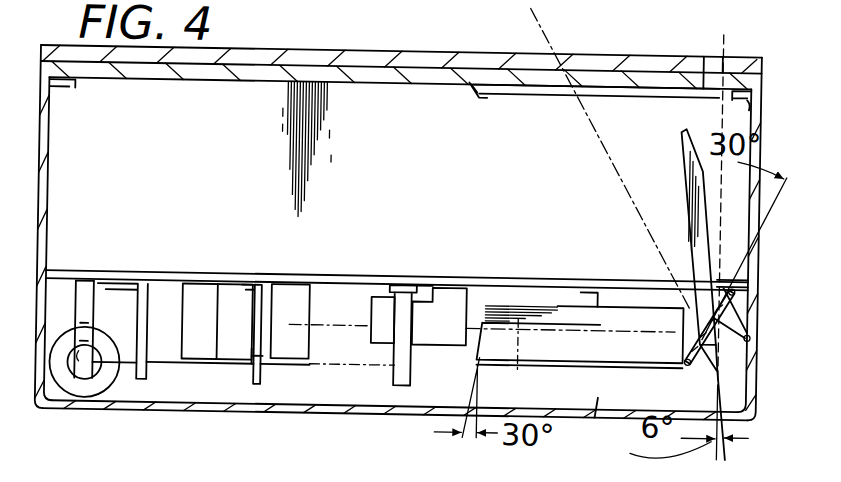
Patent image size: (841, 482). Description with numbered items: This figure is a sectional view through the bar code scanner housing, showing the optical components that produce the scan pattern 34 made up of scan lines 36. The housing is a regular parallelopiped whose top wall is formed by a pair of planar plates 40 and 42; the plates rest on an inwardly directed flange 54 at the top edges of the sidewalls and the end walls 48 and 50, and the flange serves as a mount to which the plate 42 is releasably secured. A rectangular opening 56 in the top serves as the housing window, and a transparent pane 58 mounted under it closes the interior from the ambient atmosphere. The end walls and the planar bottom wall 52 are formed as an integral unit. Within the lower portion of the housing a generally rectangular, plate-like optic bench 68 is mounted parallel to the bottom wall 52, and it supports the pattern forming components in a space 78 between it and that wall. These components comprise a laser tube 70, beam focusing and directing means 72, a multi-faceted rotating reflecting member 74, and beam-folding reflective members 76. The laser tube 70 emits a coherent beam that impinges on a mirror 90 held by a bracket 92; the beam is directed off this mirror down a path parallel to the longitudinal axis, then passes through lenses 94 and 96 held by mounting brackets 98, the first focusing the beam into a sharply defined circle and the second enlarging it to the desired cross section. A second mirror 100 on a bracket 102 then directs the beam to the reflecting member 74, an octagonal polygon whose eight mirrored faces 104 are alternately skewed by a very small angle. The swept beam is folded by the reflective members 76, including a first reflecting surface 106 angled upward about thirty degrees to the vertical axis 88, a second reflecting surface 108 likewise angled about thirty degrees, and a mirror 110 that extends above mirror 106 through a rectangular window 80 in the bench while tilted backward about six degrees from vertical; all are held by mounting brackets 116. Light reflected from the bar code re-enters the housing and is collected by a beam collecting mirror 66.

The scan pattern 34 is at (632, 42).
The scan lines 36 is at (532, 7).
The planar plate 40 is at (711, 45).
The planar plate 42 is at (743, 50).
The end wall 48 is at (762, 390).
The end wall 50 is at (47, 143).
The bottom wall 52 is at (289, 405).
The flange 54 is at (62, 80).
The rectangular opening 56 is at (487, 82).
The transparent pane 58 is at (535, 87).
The beam collecting mirror 66 is at (458, 294).
The optic bench 68 is at (350, 270).
The laser tube 70 is at (106, 384).
The beam focusing and directing means 72 is at (214, 391).
The multi-faceted rotating reflecting member 74 is at (232, 290).
The beam-folding reflective members 76 is at (644, 349).
The space 78 is at (569, 424).
The window 80 is at (452, 278).
The vertical axis 88 is at (647, 437).
The mirror 90 is at (82, 302).
The bracket 92 is at (92, 279).
The lens 94 is at (137, 357).
The lens 96 is at (265, 358).
The mounting brackets 98 is at (145, 288).
The second mirror 100 is at (398, 366).
The bracket 102 is at (416, 360).
The faces 104 is at (201, 286).
The first reflecting surface 106 is at (704, 355).
The second reflecting surface 108 is at (508, 297).
The second reflecting surface 110 is at (687, 150).
The mounting brackets 116 is at (563, 284).